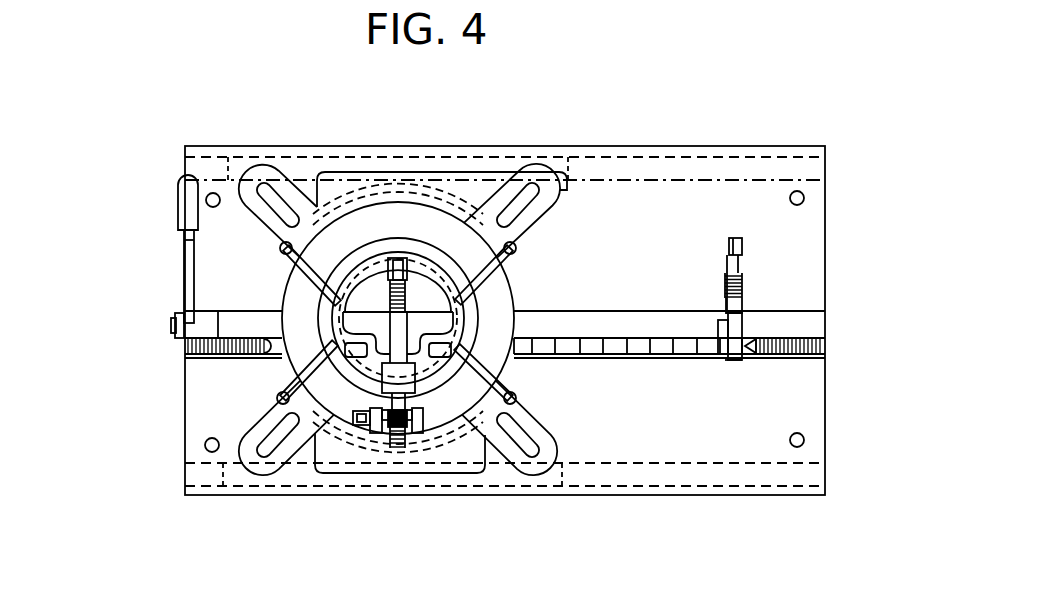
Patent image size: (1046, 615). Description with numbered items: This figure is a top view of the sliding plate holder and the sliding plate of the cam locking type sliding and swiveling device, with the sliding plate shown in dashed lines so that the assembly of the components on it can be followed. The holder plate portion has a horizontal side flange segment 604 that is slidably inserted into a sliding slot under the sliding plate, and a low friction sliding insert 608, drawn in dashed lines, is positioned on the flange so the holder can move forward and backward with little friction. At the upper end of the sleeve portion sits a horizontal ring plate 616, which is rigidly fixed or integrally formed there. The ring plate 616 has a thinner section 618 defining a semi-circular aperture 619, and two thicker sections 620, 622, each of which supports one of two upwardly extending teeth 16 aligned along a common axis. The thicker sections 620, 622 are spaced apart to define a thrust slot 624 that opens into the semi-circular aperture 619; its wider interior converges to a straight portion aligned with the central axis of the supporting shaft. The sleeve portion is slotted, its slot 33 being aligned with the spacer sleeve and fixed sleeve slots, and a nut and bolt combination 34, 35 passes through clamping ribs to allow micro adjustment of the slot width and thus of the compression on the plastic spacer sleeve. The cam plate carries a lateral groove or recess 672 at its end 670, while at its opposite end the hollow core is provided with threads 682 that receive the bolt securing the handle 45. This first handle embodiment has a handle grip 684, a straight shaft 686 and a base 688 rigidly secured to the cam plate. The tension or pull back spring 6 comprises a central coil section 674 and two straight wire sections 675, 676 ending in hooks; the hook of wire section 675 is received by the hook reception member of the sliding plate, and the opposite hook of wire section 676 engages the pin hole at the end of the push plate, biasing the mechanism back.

The side flange segment 604 is at (268, 168).
The low friction sliding insert 608 is at (565, 170).
The semi-circular aperture 619 is at (384, 290).
The horizontal ring plate 616 is at (452, 272).
The thinner section 618 is at (345, 272).
The thicker section 622 is at (458, 335).
The thicker section 620 is at (345, 333).
The thrust slot 624 is at (510, 368).
The end of cam plate 670 is at (663, 330).
The base 688 is at (180, 345).
The handle grip 684 is at (183, 192).
The straight shaft 686 is at (182, 285).
The handle 45 is at (185, 250).
The threads 682 is at (172, 323).
The upwardly extending teeth 16 is at (355, 350).
The nut 34 is at (359, 430).
The bolt 35 is at (422, 430).
The slot 33 is at (398, 440).
The straight wire section 675 is at (742, 252).
The straight wire section 676 is at (727, 313).
The central coil section 674 is at (740, 305).
The tension or pull back spring 6 is at (742, 287).
The lateral groove or recess 672 is at (742, 330).